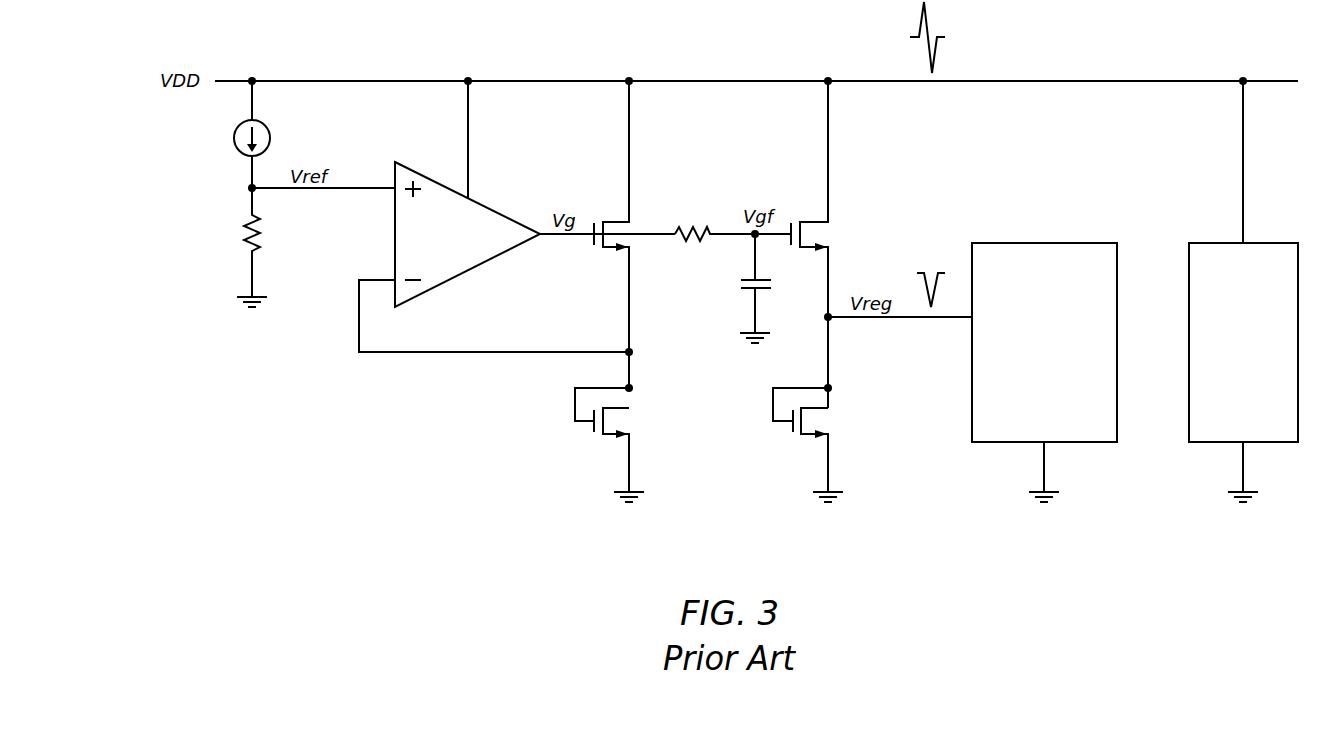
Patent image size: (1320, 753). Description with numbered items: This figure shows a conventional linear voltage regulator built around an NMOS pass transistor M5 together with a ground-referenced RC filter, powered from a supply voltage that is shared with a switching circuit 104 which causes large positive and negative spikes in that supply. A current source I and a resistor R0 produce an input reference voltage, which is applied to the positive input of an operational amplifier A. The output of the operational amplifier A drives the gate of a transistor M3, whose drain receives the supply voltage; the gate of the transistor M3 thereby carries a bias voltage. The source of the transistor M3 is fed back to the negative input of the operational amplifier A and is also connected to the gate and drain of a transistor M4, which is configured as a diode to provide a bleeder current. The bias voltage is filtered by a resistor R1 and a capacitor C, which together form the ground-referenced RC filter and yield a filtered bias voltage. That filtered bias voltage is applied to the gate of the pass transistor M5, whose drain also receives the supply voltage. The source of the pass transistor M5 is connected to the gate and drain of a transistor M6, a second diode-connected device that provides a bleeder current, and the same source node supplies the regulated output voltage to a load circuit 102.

The load circuit 102 is at (1044, 372).
The switching circuit 104 is at (1243, 291).
The current source I is at (241, 146).
The resistor R0 is at (241, 259).
The operational amplifier A is at (467, 194).
The transistor M3 is at (609, 234).
The resistor R1 is at (733, 223).
The capacitor C is at (742, 288).
The pass transistor M5 is at (827, 244).
The transistor M4 is at (620, 445).
The transistor M6 is at (818, 445).